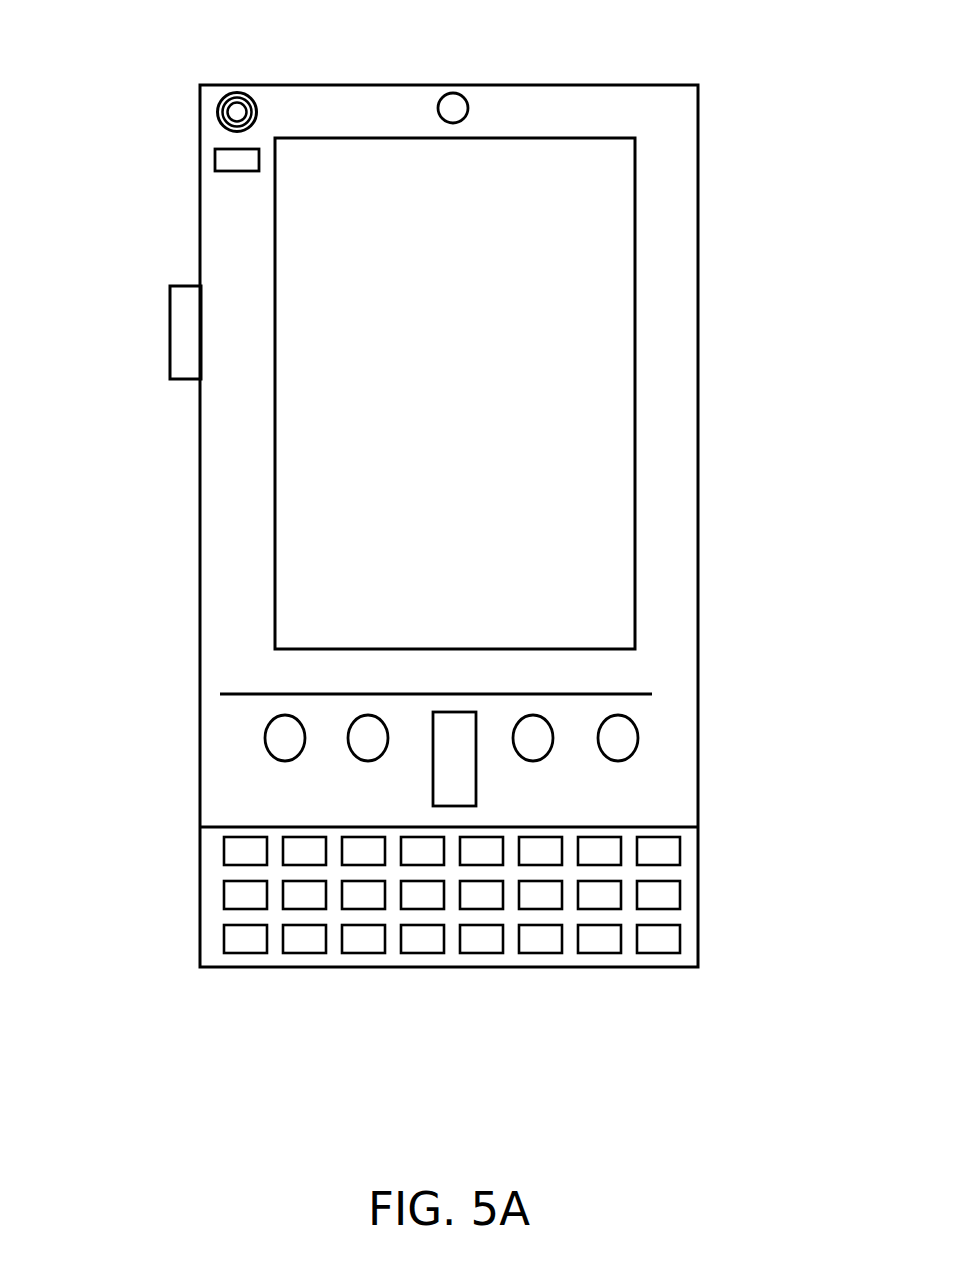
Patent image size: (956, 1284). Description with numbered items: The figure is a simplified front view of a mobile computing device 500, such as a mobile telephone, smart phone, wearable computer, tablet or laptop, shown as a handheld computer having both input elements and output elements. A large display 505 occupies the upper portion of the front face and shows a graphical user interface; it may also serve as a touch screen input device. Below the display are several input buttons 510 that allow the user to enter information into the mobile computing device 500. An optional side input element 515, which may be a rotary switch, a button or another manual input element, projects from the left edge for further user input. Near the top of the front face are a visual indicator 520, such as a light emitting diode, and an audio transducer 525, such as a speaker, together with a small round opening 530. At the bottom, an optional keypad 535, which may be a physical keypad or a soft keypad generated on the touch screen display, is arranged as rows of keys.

The mobile computing device 500 is at (687, 100).
The display 505 is at (385, 562).
The input buttons 510 is at (452, 765).
The side input element 515 is at (168, 333).
The visual indicator 520 is at (215, 163).
The audio transducer 525 is at (218, 112).
The sensor 530 is at (465, 106).
The keypad 535 is at (210, 945).